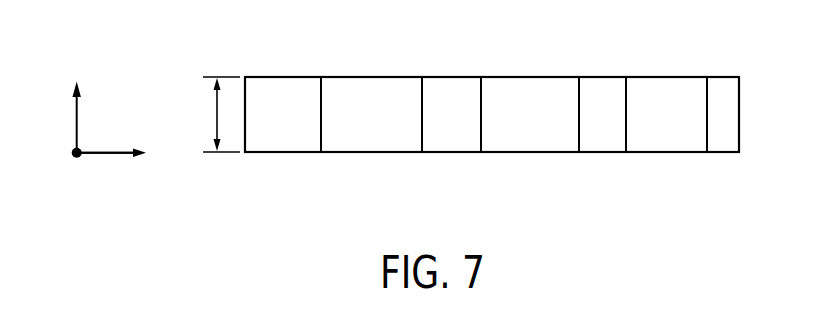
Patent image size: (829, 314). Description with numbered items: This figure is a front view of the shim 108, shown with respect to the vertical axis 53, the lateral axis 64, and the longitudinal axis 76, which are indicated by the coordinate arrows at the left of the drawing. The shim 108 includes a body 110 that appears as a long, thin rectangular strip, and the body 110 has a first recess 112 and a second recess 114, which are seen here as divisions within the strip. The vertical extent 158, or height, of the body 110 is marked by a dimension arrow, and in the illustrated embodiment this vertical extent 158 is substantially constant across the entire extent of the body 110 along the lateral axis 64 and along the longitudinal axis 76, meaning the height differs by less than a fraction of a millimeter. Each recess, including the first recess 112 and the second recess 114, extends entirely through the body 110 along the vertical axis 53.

The vertical axis 53 is at (75, 123).
The lateral axis 64 is at (106, 152).
The longitudinal axis 76 is at (78, 158).
The shim 108 is at (269, 162).
The body 110 is at (453, 77).
The first recess 112 is at (372, 87).
The second recess 114 is at (537, 87).
The vertical extent 158 is at (215, 112).